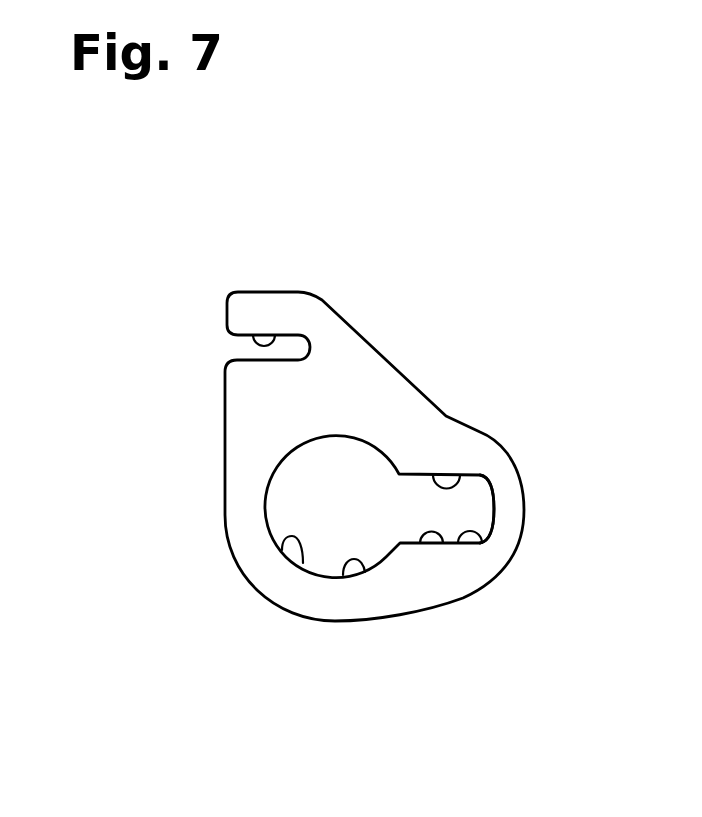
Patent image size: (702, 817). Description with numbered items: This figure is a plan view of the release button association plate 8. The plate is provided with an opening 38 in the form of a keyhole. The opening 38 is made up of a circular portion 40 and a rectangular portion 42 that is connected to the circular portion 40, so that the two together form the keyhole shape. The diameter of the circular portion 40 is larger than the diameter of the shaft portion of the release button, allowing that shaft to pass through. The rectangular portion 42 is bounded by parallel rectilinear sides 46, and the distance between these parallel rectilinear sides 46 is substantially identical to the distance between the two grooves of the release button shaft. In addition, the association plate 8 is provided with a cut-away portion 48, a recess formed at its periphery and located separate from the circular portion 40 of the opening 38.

The release button association plate 8 is at (441, 333).
The opening 38 is at (365, 572).
The circular portion 40 is at (303, 552).
The rectangular portion 42 is at (486, 542).
The parallel rectilinear sides 46 is at (460, 477).
The cut-away portion 48 is at (264, 342).